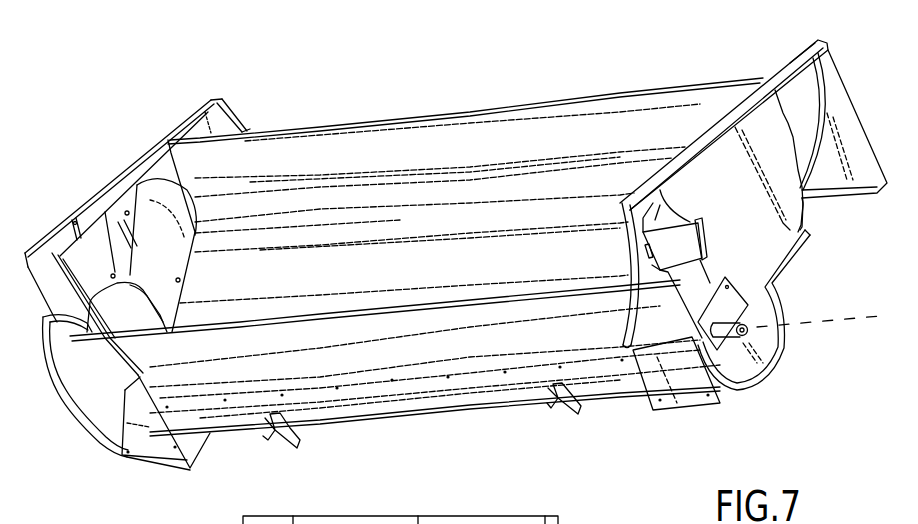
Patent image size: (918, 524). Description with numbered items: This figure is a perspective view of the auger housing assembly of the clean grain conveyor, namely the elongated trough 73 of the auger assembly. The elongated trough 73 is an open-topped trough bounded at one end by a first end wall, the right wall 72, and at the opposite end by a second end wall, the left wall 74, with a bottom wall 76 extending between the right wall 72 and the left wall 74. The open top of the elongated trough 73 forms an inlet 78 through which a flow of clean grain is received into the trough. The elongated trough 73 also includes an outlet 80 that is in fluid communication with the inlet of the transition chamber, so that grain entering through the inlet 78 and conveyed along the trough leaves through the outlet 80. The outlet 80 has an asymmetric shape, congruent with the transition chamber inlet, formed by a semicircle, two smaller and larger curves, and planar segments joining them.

The first end wall 72 is at (133, 203).
The elongated trough 73 is at (358, 250).
The second end wall 74 is at (788, 152).
The bottom wall 76 is at (380, 413).
The inlet 78 is at (533, 120).
The outlet 80 is at (83, 242).